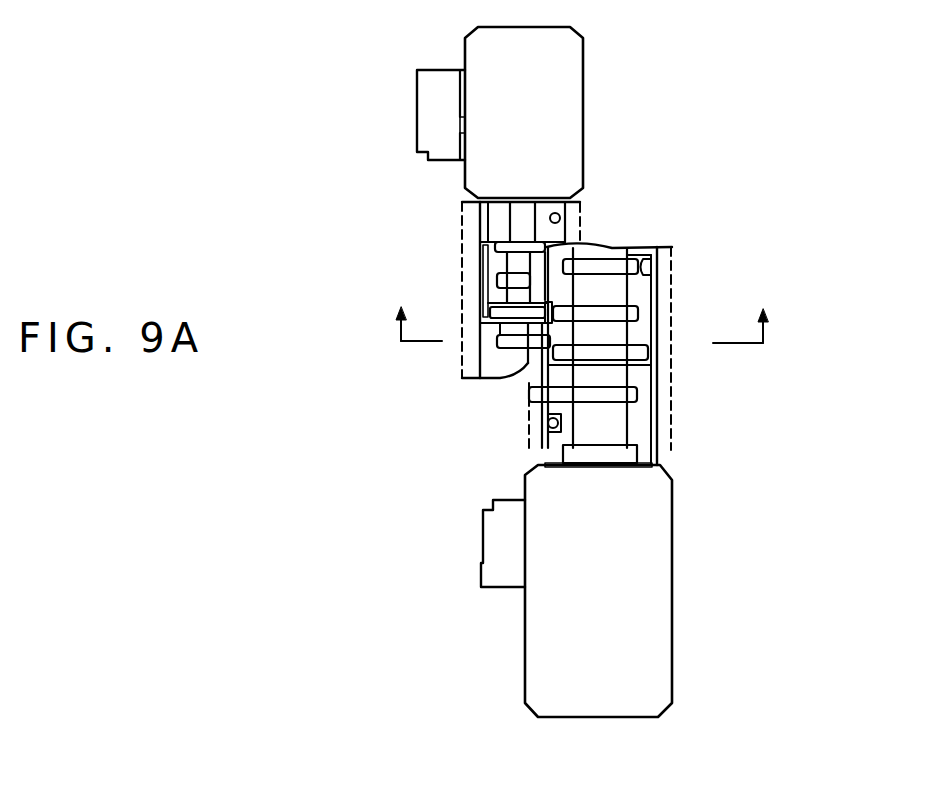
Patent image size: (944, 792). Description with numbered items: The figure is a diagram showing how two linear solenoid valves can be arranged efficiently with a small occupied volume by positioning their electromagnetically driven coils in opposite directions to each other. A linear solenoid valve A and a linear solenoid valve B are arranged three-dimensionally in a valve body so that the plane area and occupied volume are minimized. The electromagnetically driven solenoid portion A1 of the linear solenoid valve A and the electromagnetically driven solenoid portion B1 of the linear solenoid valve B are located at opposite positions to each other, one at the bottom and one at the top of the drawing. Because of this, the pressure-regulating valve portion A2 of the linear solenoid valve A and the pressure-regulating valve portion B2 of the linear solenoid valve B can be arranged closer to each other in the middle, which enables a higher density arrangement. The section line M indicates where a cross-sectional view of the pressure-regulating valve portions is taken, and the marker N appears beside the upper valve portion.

The linear solenoid valve B is at (602, 193).
The electromagnetically driven solenoid portion B1 is at (563, 83).
The pressure-regulating valve portion B2 is at (477, 357).
The linear solenoid valve A is at (522, 465).
The electromagnetically driven solenoid portion A1 is at (547, 622).
The pressure-regulating valve portion A2 is at (657, 424).
The line M- M is at (582, 314).
The section marker N is at (469, 242).